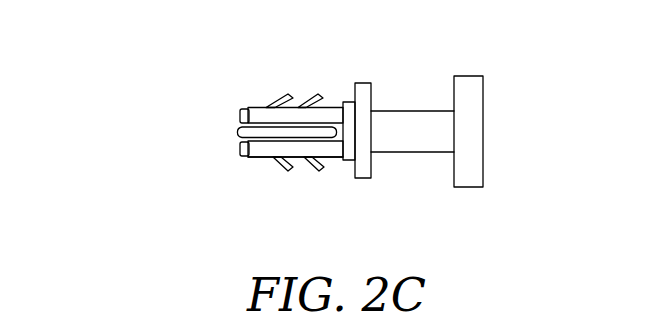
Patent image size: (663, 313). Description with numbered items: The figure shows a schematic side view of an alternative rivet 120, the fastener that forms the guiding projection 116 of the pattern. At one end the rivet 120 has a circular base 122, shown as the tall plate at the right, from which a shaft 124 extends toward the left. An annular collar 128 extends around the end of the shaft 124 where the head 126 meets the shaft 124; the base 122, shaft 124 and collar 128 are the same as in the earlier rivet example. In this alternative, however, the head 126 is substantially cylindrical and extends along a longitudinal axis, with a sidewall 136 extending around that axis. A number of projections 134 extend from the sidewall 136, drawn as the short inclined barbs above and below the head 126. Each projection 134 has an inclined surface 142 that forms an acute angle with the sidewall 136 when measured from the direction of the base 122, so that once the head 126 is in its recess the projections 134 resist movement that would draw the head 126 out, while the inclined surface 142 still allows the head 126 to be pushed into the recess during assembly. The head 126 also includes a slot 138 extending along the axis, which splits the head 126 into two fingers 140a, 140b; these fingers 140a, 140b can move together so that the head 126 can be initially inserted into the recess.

The rivet 120 is at (262, 73).
The guiding projection 116 is at (292, 93).
The sidewall 136 is at (333, 105).
The annular collar 128 is at (360, 82).
The shaft 124 is at (418, 114).
The circular base 122 is at (473, 86).
The finger 140a is at (243, 117).
The slot 138 is at (252, 133).
The finger 140b is at (245, 151).
The head 126 is at (260, 158).
The inclined surface 142 is at (278, 163).
The projections 134 is at (308, 166).